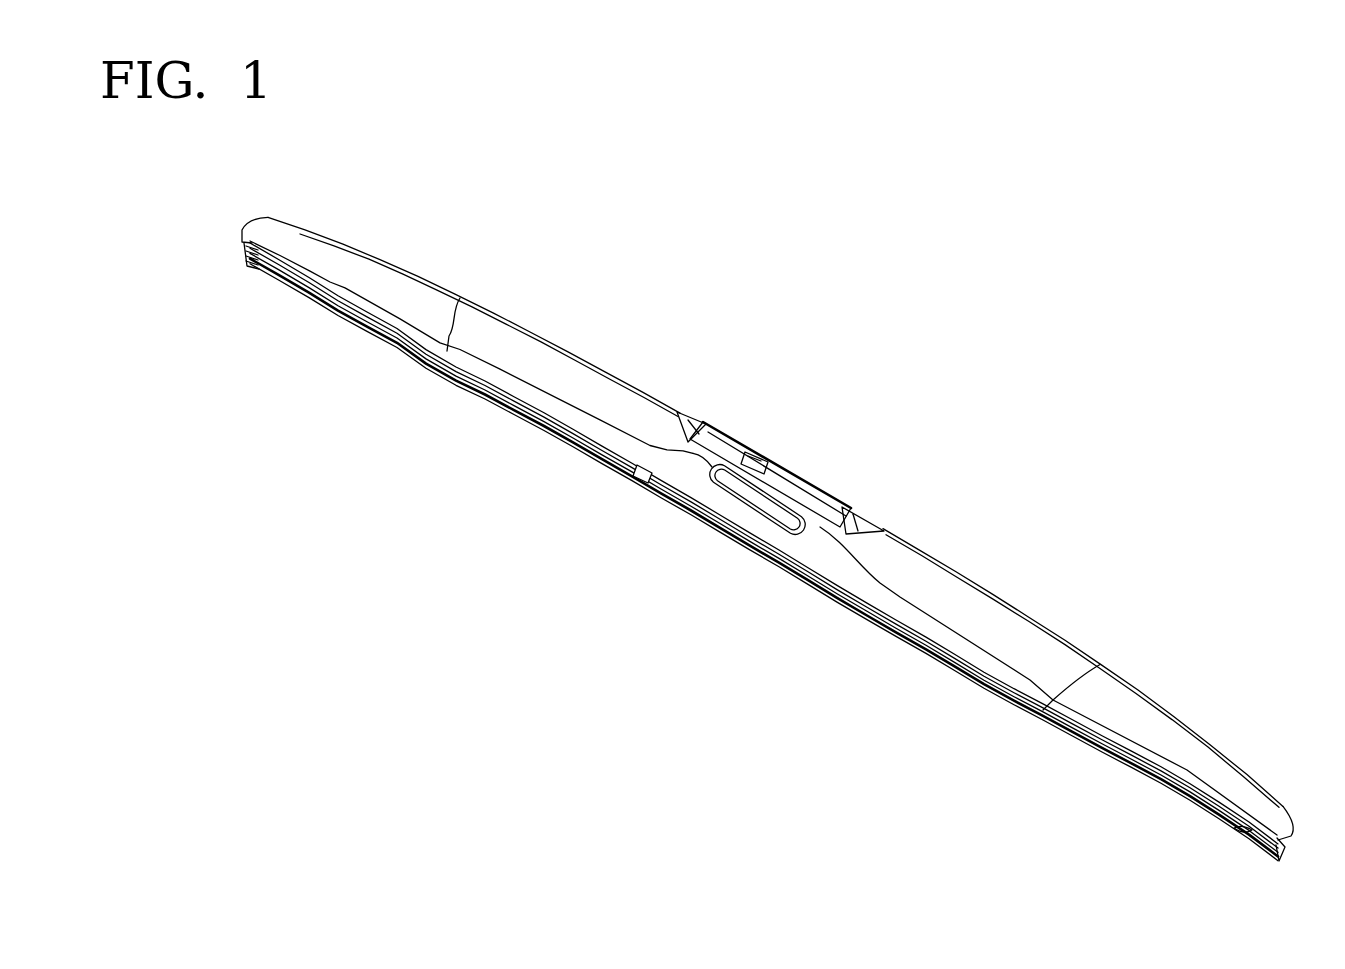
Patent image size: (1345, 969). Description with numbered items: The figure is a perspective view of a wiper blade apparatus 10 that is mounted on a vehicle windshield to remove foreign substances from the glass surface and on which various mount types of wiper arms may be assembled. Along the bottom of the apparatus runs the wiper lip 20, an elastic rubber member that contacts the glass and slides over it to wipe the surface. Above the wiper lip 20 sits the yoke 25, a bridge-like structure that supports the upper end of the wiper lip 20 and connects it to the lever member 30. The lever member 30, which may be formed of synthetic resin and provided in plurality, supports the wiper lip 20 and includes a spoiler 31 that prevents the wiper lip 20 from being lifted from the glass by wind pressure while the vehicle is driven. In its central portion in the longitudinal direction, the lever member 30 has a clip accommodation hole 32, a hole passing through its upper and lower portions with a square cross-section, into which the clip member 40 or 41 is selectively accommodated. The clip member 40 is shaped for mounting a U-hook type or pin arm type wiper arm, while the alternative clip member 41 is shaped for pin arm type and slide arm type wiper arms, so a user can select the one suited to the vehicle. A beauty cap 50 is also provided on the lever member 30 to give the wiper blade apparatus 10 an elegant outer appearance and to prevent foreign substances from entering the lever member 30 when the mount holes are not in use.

The wiper blade apparatus 10 is at (915, 360).
The wiper lip 20 is at (355, 324).
The yoke 25 is at (638, 467).
The lever member 30 is at (560, 381).
The spoiler 31 is at (613, 394).
The clip accommodation hole 32 is at (862, 520).
The clip member 40 is at (776, 434).
The clip member 41 is at (756, 449).
The beauty cap 50 is at (782, 513).